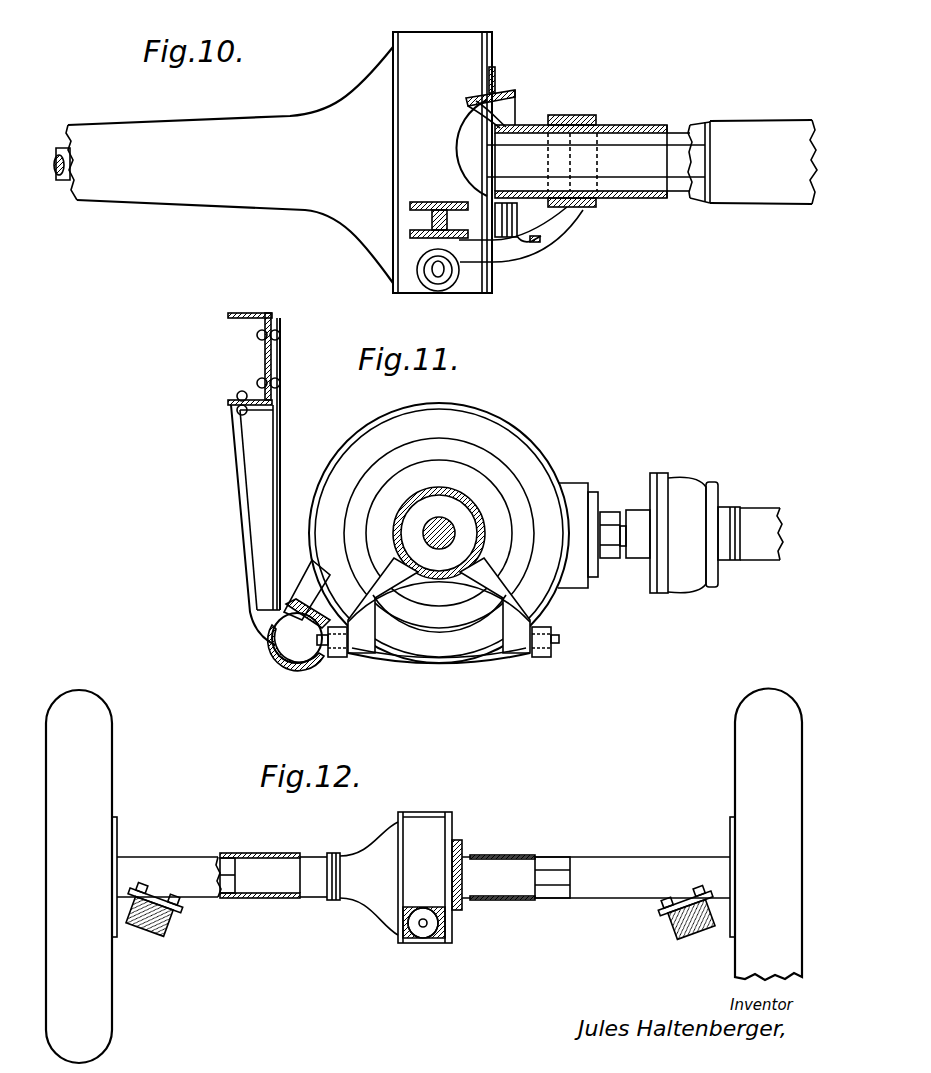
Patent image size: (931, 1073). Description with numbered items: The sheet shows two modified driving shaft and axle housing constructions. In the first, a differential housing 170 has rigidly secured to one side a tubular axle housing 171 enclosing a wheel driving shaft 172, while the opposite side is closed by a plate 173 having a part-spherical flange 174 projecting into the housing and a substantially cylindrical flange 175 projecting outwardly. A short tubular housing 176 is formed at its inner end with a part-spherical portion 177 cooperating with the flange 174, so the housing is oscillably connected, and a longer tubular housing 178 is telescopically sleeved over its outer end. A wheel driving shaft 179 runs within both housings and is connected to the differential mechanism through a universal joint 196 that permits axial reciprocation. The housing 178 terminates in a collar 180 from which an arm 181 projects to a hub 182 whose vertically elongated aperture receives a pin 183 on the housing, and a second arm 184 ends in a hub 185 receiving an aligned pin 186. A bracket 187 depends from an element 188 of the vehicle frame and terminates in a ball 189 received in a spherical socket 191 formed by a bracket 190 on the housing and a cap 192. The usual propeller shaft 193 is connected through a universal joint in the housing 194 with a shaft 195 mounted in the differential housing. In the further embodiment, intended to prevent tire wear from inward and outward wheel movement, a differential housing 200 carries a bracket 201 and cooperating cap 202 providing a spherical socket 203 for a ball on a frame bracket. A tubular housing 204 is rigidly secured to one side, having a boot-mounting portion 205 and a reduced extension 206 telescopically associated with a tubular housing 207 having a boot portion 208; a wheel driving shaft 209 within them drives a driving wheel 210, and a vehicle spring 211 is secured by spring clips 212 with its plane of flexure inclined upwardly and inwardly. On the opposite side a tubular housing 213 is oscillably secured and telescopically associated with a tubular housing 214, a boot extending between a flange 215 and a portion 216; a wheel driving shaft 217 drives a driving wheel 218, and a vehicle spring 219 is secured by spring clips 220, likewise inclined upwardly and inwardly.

In FIG. 10, the differential housing 170 is at (438, 45).
In FIG. 11, the differential housing 170 is at (449, 660).
In FIG. 10, the tubular axle housing 171 is at (228, 193).
In FIG. 10, the wheel driving shaft 172 is at (65, 186).
In FIG. 10, the plate 173 is at (499, 92).
In FIG. 10, the part-spherical flange 174 is at (498, 108).
In FIG. 10, the cylindrical flange 175 is at (521, 250).
In FIG. 10, the short tubular housing 176 is at (538, 127).
In FIG. 10, the part-spherical portion 177 is at (552, 115).
In FIG. 10, the longer tubular housing 178 is at (745, 130).
In FIG. 11, the longer tubular housing 178 is at (462, 492).
In FIG. 10, the wheel driving shaft 179 is at (640, 156).
In FIG. 11, the wheel driving shaft 179 is at (441, 524).
In FIG. 10, the collar 180 is at (606, 126).
In FIG. 10, the arm 181 is at (543, 238).
In FIG. 11, the arm 181 is at (516, 592).
In FIG. 11, the hub 182 is at (541, 652).
In FIG. 11, the pin 183 is at (560, 638).
In FIG. 10, the second arm 184 is at (499, 251).
In FIG. 11, the second arm 184 is at (358, 596).
In FIG. 10, the hub 185 is at (453, 280).
In FIG. 11, the hub 185 is at (335, 650).
In FIG. 10, the pin 186 is at (438, 278).
In FIG. 11, the pin 186 is at (352, 630).
In FIG. 11, the bracket 187 is at (282, 451).
In FIG. 11, the element of the vehicle frame 188 is at (262, 313).
In FIG. 11, the ball 189 is at (292, 650).
In FIG. 11, the bracket 190 is at (298, 595).
In FIG. 11, the spherical socket 191 is at (279, 649).
In FIG. 11, the cap 192 is at (304, 657).
In FIG. 11, the propeller shaft 193 is at (757, 518).
In FIG. 11, the universal joint housing 194 is at (690, 490).
In FIG. 11, the shaft 195 is at (621, 512).
In FIG. 10, the universal joint 196 is at (468, 140).
In FIG. 12, the differential housing 200 is at (430, 822).
In FIG. 12, the bracket 201 is at (416, 922).
In FIG. 12, the cap 202 is at (426, 938).
In FIG. 12, the spherical socket 203 is at (419, 945).
In FIG. 12, the tubular housing 204 is at (375, 892).
In FIG. 12, the portion 205 is at (333, 903).
In FIG. 12, the reduced extension 206 is at (306, 870).
In FIG. 12, the tubular housing 207 is at (197, 862).
In FIG. 12, the portion 208 is at (294, 855).
In FIG. 12, the wheel driving shaft 209 is at (231, 882).
In FIG. 12, the driving wheel 210 is at (99, 722).
In FIG. 12, the vehicle spring 211 is at (148, 932).
In FIG. 12, the spring clips 212 is at (171, 935).
In FIG. 12, the tubular housing 213 is at (466, 866).
In FIG. 12, the tubular housing 214 is at (598, 882).
In FIG. 12, the flange 215 is at (459, 843).
In FIG. 12, the portion 216 is at (483, 901).
In FIG. 12, the wheel driving shaft 217 is at (553, 874).
In FIG. 12, the driving wheel 218 is at (752, 723).
In FIG. 12, the vehicle spring 219 is at (693, 930).
In FIG. 12, the spring clips 220 is at (668, 917).